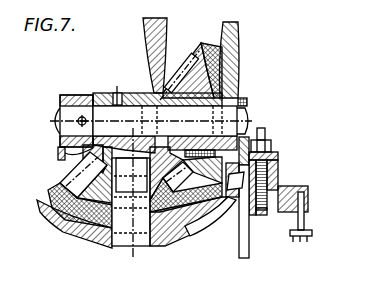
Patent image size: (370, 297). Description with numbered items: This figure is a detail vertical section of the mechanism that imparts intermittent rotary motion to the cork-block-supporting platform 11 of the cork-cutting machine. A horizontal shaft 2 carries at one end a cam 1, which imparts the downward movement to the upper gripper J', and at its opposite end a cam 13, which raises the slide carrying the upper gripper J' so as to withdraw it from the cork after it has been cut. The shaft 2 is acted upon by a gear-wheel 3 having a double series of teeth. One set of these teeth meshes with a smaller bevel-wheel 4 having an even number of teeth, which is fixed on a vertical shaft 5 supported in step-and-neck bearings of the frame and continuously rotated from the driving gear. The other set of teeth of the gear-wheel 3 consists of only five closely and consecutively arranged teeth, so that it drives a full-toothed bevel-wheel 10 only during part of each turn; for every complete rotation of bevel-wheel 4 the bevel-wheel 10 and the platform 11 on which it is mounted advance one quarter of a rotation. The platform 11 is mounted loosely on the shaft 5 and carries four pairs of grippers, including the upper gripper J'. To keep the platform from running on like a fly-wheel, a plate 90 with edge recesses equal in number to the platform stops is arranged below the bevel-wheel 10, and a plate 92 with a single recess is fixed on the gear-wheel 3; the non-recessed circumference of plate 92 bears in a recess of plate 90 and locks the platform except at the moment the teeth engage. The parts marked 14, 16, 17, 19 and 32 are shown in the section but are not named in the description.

The cam 1 is at (247, 146).
The horizontal shaft 2 is at (151, 121).
The gear-wheel 3 is at (190, 64).
The bevel-wheel 4 is at (88, 157).
The vertical shaft 5 is at (131, 193).
The bevel-wheel 10 is at (70, 177).
The platform 11 is at (63, 232).
The cam 13 is at (54, 149).
The foot 14 is at (297, 231).
The spring housing 16 is at (279, 178).
The nut 17 is at (263, 144).
The plate 19 is at (247, 250).
The rod 32 is at (305, 228).
The plate 90 is at (48, 196).
The plate 92 is at (203, 42).
The upper gripper J' is at (319, 228).